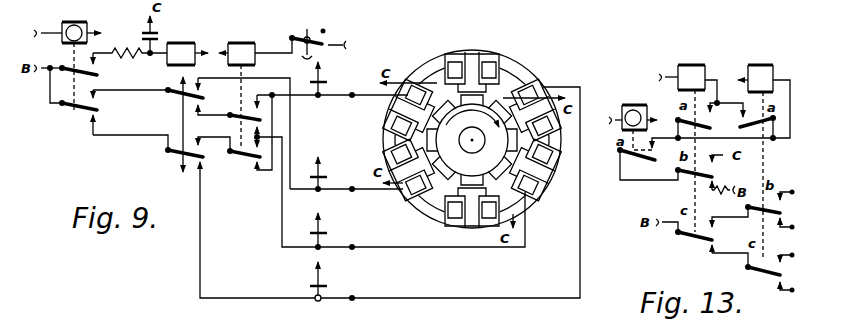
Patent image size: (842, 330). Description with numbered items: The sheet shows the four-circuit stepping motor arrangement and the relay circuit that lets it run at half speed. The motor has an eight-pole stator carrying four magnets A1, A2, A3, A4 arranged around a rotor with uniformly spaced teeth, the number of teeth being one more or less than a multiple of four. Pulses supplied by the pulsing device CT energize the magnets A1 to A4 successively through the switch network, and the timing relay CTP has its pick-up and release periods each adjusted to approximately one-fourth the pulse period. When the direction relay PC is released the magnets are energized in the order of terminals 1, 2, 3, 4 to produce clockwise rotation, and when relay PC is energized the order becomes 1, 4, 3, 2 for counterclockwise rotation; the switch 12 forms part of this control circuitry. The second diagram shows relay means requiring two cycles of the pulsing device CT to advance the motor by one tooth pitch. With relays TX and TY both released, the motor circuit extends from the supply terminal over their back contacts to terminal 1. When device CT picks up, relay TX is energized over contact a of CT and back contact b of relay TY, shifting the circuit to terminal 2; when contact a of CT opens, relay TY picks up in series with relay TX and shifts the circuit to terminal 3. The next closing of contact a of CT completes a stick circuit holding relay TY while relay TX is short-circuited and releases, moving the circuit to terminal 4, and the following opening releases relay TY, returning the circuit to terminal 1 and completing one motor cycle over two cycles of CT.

In FIG. 9, the relay switch 12 is at (307, 34).
In FIG. 9, the terminal 1 is at (390, 194).
In FIG. 13, the terminal 1 is at (789, 282).
In FIG. 9, the terminal 2 is at (391, 193).
In FIG. 13, the terminal 2 is at (789, 248).
In FIG. 9, the terminal 3 is at (346, 164).
In FIG. 13, the terminal 3 is at (789, 187).
In FIG. 9, the terminal 4 is at (332, 78).
In FIG. 13, the terminal 4 is at (789, 217).
In FIG. 9, the magnet A1 is at (502, 62).
In FIG. 9, the magnet A2 is at (532, 180).
In FIG. 9, the magnet A3 is at (497, 218).
In FIG. 9, the magnet A4 is at (396, 108).
In FIG. 9, the pulsing device CT is at (68, 57).
In FIG. 13, the pulsing device CT is at (633, 118).
In FIG. 9, the timing relay CTP is at (197, 45).
In FIG. 9, the direction relay PC is at (241, 86).
In FIG. 13, the relay TY is at (676, 138).
In FIG. 13, the relay TX is at (750, 152).